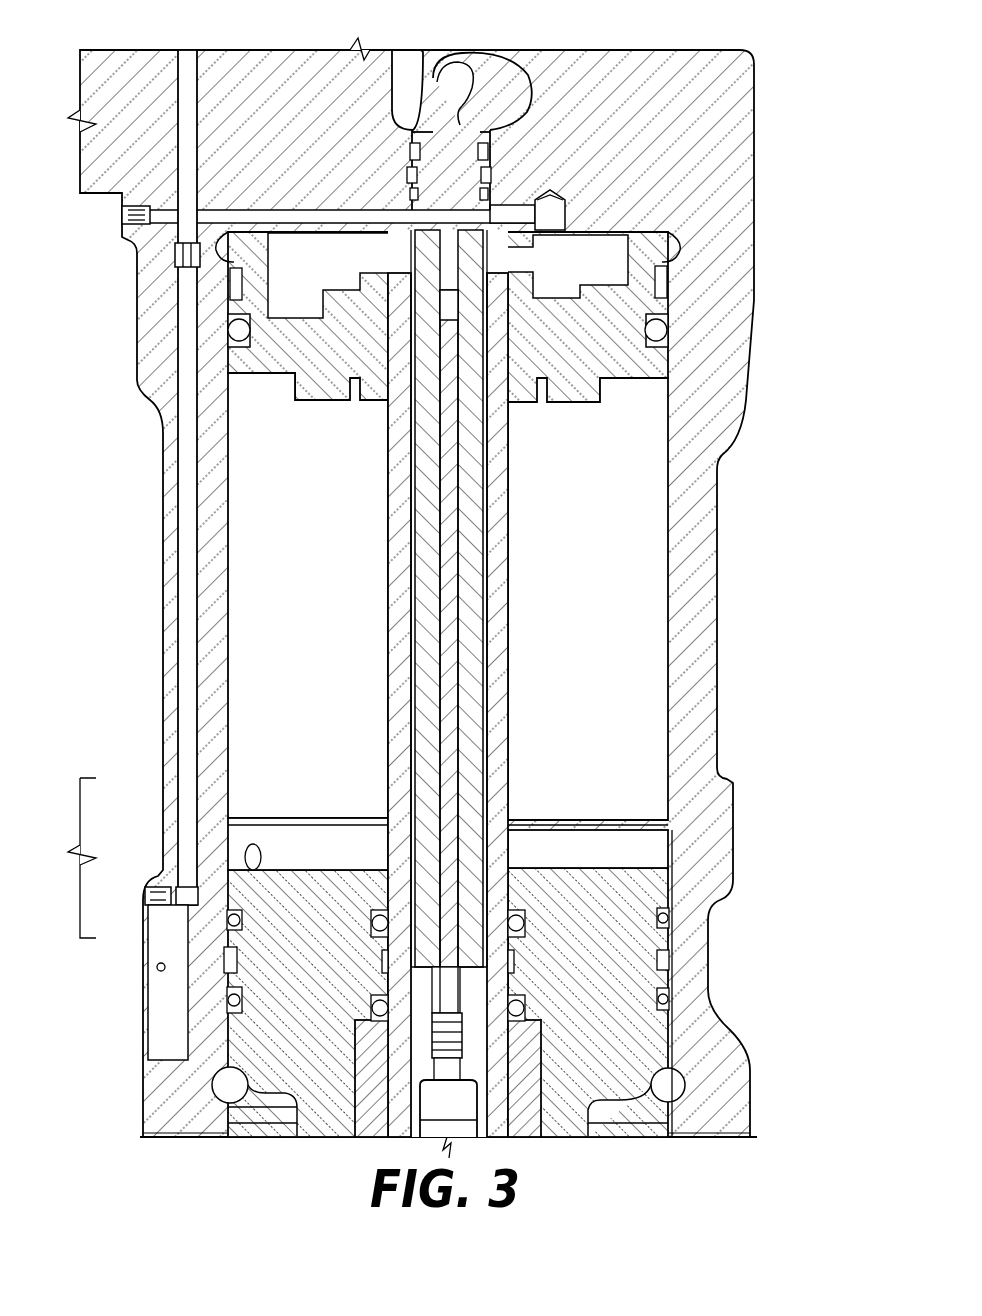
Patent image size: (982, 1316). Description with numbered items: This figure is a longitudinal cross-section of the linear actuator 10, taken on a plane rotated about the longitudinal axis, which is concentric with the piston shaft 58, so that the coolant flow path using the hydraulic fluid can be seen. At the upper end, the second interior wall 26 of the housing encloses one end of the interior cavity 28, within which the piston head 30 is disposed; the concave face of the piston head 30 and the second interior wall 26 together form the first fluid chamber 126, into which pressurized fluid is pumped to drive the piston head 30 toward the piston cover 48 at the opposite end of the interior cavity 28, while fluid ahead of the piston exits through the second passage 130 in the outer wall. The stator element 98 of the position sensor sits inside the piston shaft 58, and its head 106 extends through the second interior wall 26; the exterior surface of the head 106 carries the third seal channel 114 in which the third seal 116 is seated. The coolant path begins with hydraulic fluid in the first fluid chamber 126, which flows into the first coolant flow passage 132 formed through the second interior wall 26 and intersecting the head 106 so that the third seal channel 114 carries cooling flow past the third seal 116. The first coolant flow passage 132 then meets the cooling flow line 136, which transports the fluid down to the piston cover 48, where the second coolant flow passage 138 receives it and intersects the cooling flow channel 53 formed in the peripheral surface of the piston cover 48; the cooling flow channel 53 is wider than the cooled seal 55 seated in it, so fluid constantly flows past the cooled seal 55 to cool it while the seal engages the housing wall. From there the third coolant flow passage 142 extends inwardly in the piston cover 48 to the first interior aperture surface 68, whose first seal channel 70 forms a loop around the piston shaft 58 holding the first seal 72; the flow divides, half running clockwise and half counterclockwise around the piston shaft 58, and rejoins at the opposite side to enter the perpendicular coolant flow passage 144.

The linear actuator 10 is at (758, 89).
The second interior wall 26 is at (643, 231).
The interior cavity 28 is at (588, 722).
The piston head 30 is at (600, 376).
The piston cover 48 is at (623, 1033).
The cooling flow channel 53 is at (227, 960).
The cooled seal 55 is at (227, 917).
The piston shaft 58 is at (400, 660).
The first interior aperture surface 68 is at (500, 985).
The first seal channel 70 is at (523, 1003).
The first seal 72 is at (523, 923).
The stator element 98 is at (470, 497).
The head 106 is at (443, 167).
The third seal channel 114 is at (482, 195).
The third seal 116 is at (540, 200).
The first fluid chamber 126 is at (605, 278).
The second passage 130 is at (245, 858).
The first coolant flow passage 132 is at (517, 213).
The cooling flow line 136 is at (186, 508).
The second coolant flow passage 138 is at (217, 898).
The third coolant flow passage 142 is at (660, 873).
The perpendicular coolant flow passage 144 is at (385, 868).